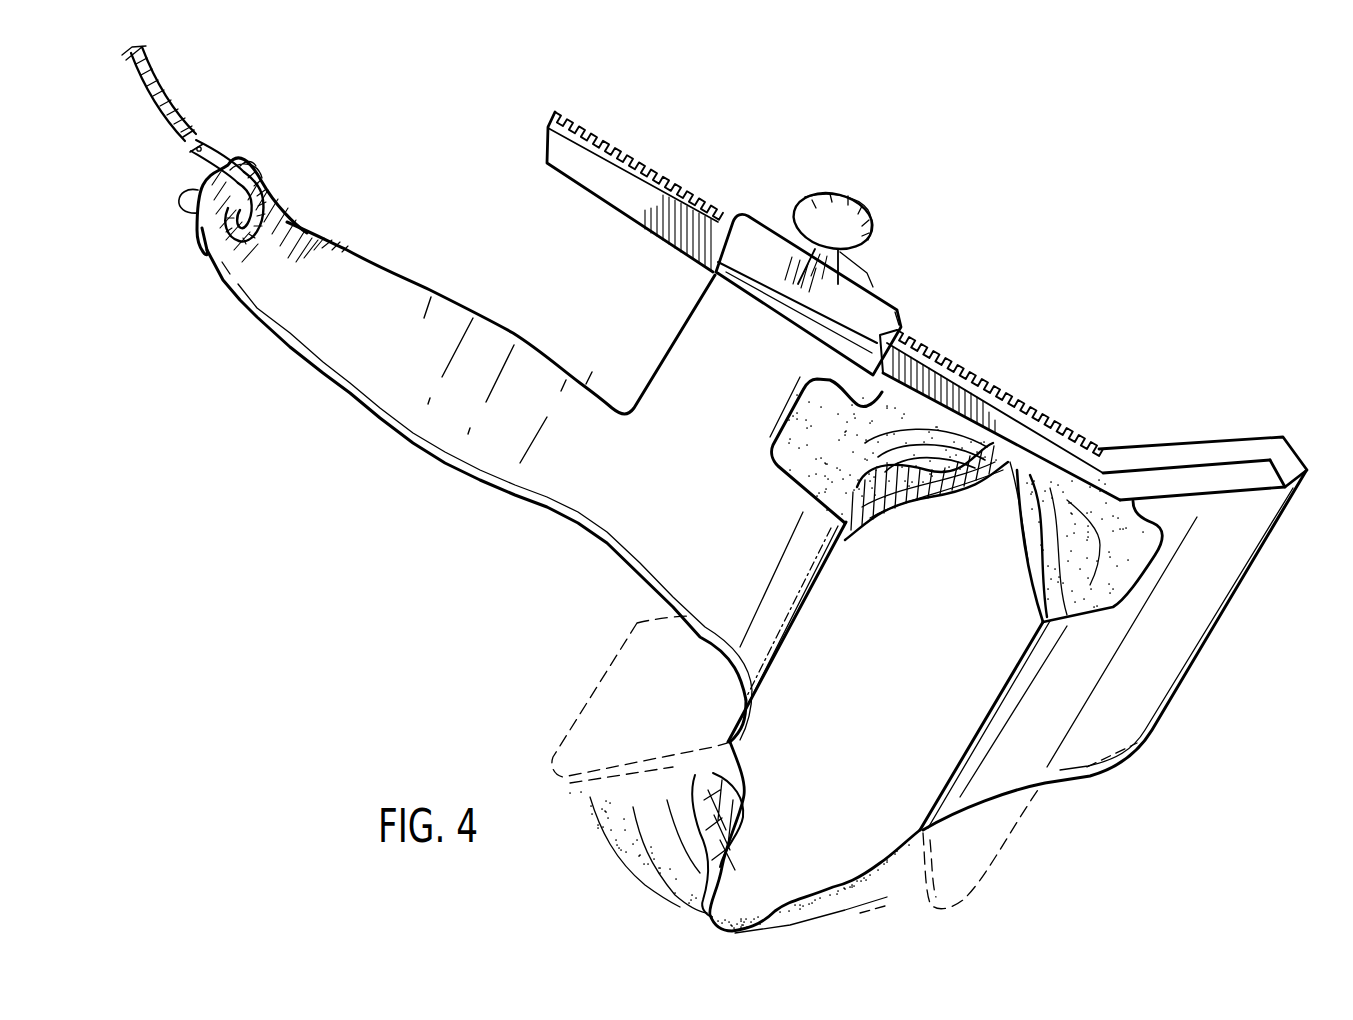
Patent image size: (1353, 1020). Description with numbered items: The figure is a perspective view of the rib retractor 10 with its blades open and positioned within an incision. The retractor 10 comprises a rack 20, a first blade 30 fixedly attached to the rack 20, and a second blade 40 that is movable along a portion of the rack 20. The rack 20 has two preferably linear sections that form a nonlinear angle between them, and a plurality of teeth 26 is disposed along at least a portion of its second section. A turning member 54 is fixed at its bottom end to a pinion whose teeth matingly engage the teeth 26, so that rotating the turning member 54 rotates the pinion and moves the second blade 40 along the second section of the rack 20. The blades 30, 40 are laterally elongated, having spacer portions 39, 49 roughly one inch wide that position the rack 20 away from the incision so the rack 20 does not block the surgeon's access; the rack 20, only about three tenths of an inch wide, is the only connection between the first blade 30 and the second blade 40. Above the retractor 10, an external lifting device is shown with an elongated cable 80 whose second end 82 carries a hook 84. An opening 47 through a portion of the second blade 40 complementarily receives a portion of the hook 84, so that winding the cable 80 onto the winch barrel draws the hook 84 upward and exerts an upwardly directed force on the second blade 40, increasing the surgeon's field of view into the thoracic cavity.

The rib retractor 10 is at (282, 427).
The rack 20 is at (548, 133).
The teeth 26 is at (682, 190).
The first blade 30 is at (1220, 627).
The spacer portion 39 is at (1187, 600).
The second blade 40 is at (824, 572).
The opening 47 is at (202, 243).
The spacer portion 49 is at (735, 388).
The turning member 54 is at (863, 212).
The elongated cable 80 is at (150, 70).
The second end 82 is at (187, 122).
The hook 84 is at (235, 172).